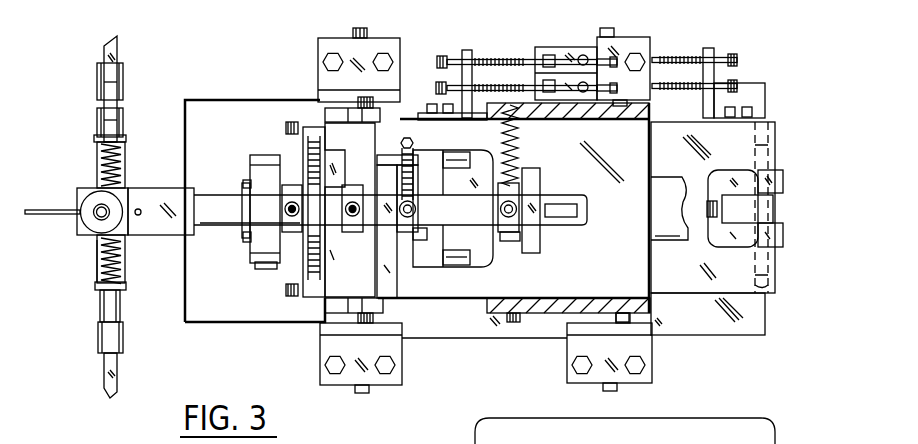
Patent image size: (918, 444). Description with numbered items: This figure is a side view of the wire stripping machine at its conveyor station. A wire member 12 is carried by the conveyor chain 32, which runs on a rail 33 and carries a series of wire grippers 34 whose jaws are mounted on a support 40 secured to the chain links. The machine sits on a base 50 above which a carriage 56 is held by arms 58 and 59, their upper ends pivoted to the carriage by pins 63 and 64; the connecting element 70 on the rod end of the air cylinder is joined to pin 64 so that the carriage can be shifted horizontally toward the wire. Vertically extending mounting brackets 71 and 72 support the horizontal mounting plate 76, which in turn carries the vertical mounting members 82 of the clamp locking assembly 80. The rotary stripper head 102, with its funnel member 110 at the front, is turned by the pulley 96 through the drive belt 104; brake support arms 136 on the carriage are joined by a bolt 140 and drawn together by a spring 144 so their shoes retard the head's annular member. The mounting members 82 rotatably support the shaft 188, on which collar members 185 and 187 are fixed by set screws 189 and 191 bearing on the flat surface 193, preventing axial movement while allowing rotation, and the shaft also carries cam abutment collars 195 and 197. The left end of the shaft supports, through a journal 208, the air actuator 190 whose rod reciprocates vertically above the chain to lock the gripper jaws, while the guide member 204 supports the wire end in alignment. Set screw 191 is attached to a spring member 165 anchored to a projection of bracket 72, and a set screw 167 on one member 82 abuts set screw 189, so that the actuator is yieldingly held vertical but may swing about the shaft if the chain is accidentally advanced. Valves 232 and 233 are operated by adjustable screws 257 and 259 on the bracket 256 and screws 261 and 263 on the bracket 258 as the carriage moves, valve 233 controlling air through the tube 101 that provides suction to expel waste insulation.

The wire member 12 is at (50, 206).
The conveyor chain 32 is at (97, 75).
The rail 33 is at (118, 43).
The wire gripper 34 is at (88, 172).
The support 40 is at (96, 143).
The base 50 is at (767, 323).
The carriage 56 is at (700, 294).
The arm 58 is at (325, 112).
The arm 59 is at (780, 183).
The pin 63 is at (367, 100).
The pin 64 is at (776, 275).
The connecting element 70 is at (773, 210).
The mounting bracket 71 is at (585, 304).
The mounting bracket 72 is at (650, 124).
The horizontal mounting plate 76 is at (652, 280).
The clamp locking assembly 80 is at (80, 246).
The mounting member 82 is at (385, 250).
The pulley 96 is at (480, 160).
The tube 101 is at (672, 194).
The rotary stripper head 102 is at (245, 160).
The drive belt 104 is at (459, 169).
The funnel member 110 is at (243, 237).
The brake support arm 136 is at (303, 126).
The bolt 140 is at (293, 152).
The spring 144 is at (302, 173).
The spring member 165 is at (520, 138).
The set screw 167 is at (418, 131).
The collar member 185 is at (416, 240).
The collar member 187 is at (518, 241).
The shaft 188 is at (212, 197).
The set screw 189 is at (407, 220).
The air actuator 190 is at (85, 221).
The set screw 191 is at (509, 232).
The flat surface 193 is at (567, 204).
The cam abutment collar 195 is at (262, 268).
The cam abutment collar 197 is at (362, 185).
The guide member 204 is at (185, 106).
The journal 208 is at (152, 188).
The valve 232 is at (559, 47).
The valve 233 is at (585, 97).
The bracket 256 is at (466, 50).
The adjustable screw 257 is at (440, 56).
The bracket 258 is at (765, 117).
The adjustable screw 259 is at (440, 84).
The screw 261 is at (735, 53).
The screw 263 is at (738, 82).